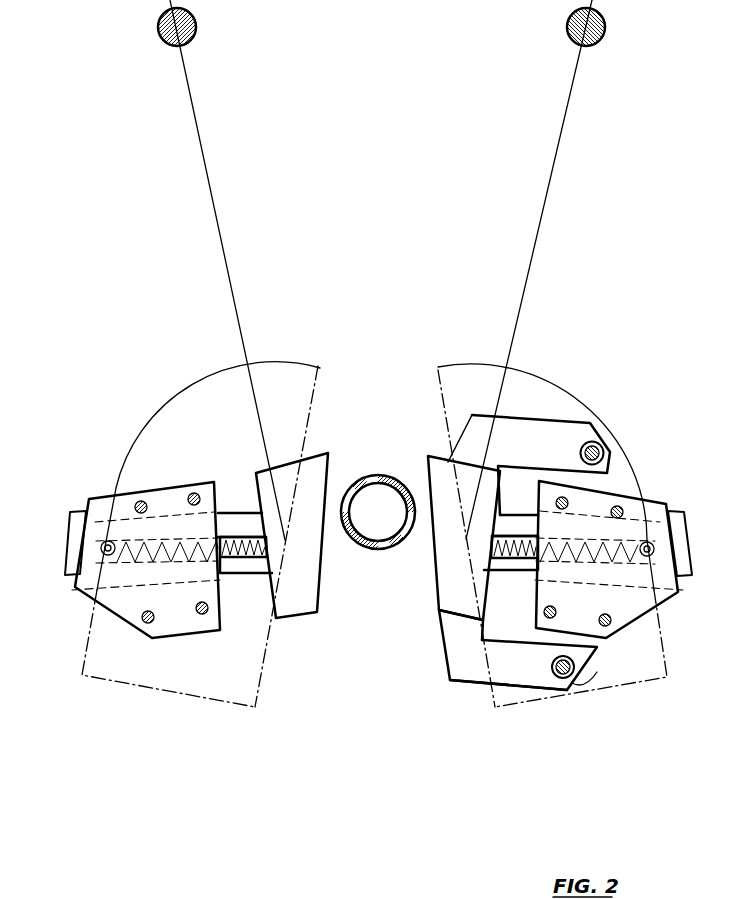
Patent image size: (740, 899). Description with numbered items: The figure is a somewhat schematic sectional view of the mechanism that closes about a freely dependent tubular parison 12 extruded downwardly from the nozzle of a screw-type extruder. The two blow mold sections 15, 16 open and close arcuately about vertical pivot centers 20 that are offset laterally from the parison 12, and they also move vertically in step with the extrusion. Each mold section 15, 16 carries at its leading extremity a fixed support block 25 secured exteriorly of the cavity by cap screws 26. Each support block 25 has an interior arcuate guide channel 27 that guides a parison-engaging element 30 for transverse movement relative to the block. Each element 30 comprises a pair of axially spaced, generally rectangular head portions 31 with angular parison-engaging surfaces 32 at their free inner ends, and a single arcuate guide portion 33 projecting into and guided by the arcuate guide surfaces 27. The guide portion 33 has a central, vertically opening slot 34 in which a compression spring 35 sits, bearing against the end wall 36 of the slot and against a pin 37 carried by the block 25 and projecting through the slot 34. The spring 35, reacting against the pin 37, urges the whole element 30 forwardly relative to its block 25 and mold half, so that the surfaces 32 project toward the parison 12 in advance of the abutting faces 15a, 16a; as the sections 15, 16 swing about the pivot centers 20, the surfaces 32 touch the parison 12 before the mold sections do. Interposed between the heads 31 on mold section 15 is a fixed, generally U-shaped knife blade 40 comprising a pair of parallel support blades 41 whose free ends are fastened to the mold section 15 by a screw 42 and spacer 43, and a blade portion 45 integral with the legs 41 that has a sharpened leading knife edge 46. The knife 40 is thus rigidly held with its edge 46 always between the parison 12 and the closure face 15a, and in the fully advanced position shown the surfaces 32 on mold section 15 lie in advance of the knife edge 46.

The tubular parison 12 is at (370, 482).
The blow mold section 15 is at (567, 405).
The abutting face of mold section 15a is at (432, 372).
The blow mold section 16 is at (184, 405).
The abutting face of mold section 16a is at (321, 372).
The vertical pivot center 20 is at (195, 33).
The fixed support block 25 is at (102, 498).
The cap screw 26 is at (148, 623).
The arcuate guide channel 27 is at (100, 582).
The parison-engaging element 30 is at (428, 601).
The head portion 31 is at (324, 458).
The parison-engaging surface 32 is at (321, 572).
The arcuate guide portion 33 is at (234, 528).
The slot 34 is at (236, 560).
The compression spring 35 is at (252, 566).
The end wall of slot 36 is at (268, 556).
The pin 37 is at (101, 548).
The knife blade 40 is at (573, 435).
The support blade 41 is at (517, 426).
The screw 42 is at (565, 679).
The spacer 43 is at (598, 676).
The blade portion 45 is at (450, 645).
The knife edge 46 is at (438, 618).